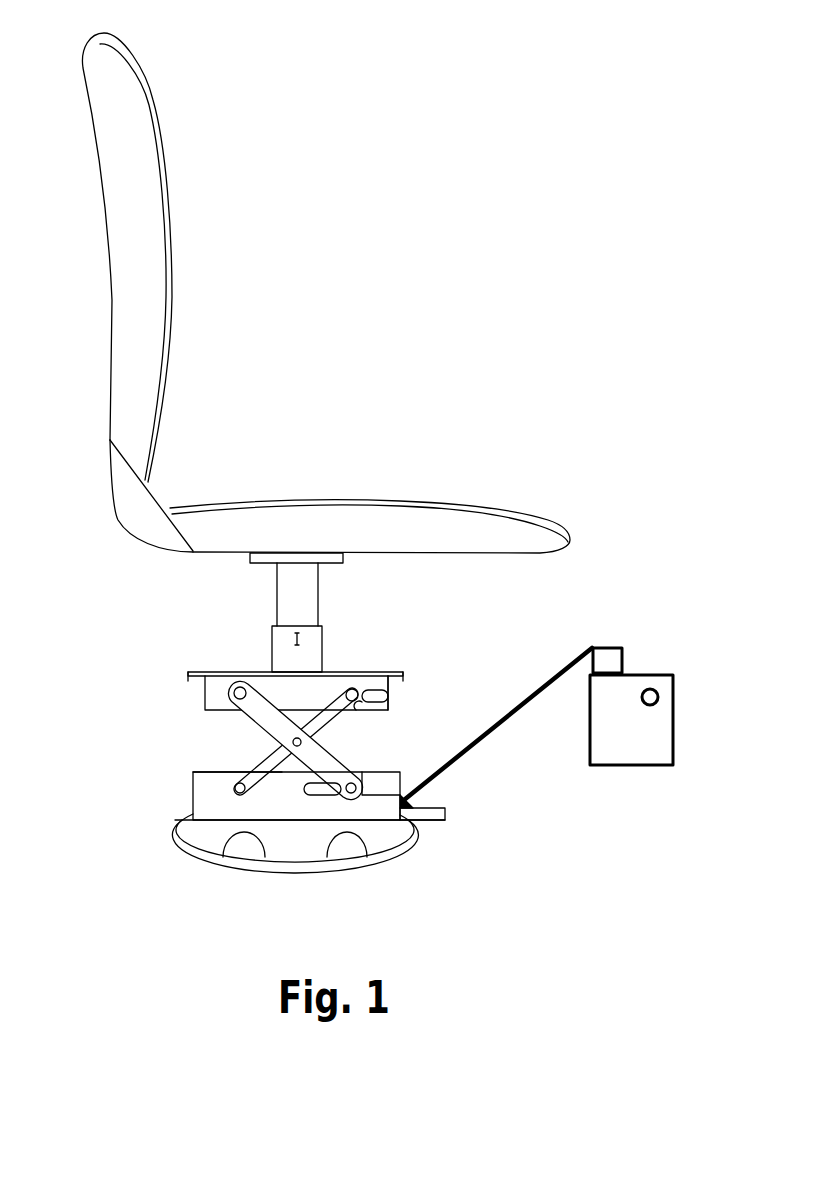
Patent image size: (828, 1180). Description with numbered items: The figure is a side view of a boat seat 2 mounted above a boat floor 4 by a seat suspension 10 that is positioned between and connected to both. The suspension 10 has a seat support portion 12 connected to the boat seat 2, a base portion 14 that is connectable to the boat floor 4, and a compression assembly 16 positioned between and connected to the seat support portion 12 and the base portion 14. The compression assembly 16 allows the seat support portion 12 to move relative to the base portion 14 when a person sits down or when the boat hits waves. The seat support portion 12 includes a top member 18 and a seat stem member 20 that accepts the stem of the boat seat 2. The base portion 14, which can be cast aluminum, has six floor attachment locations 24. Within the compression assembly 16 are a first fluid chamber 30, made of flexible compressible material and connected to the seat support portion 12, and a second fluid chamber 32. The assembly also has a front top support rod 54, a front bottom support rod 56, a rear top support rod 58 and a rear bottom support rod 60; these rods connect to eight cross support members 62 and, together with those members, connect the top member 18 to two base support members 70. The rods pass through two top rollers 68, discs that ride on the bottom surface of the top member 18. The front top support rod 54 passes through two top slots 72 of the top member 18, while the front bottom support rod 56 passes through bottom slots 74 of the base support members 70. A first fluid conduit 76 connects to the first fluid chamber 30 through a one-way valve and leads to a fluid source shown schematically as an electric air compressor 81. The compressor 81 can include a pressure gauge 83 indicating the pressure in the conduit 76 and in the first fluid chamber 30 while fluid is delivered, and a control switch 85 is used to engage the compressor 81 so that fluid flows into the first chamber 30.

The boat seat 2 is at (140, 207).
The boat floor 4 is at (587, 916).
The seat suspension 10 is at (482, 765).
The seat support portion 12 is at (370, 658).
The base portion 14 is at (192, 870).
The compression assembly 16 is at (182, 756).
The top member 18 is at (213, 672).
The seat stem member 20 is at (274, 651).
The floor attachment locations 24 is at (400, 863).
The first fluid chamber 30 is at (357, 712).
The second fluid chamber 32 is at (450, 828).
The front top support rod 54 is at (344, 672).
The front bottom support rod 56 is at (332, 777).
The rear top support rod 58 is at (238, 673).
The rear bottom support rod 60 is at (256, 763).
The cross support members 62 is at (256, 776).
The top rollers 68 is at (378, 772).
The base support members 70 is at (193, 787).
The top slots 72 is at (393, 698).
The bottom slots 74 is at (405, 772).
The first fluid conduit 76 is at (580, 655).
The electric air compressor 81 is at (683, 683).
The pressure gauge 83 is at (663, 700).
The control switch 85 is at (623, 660).